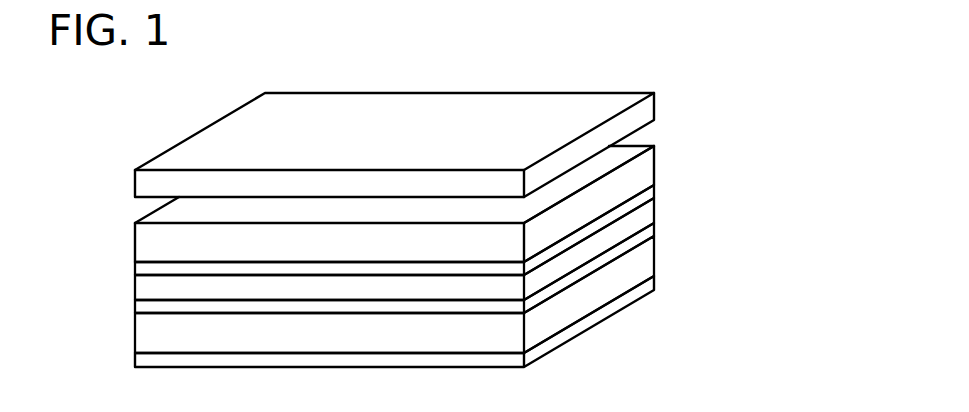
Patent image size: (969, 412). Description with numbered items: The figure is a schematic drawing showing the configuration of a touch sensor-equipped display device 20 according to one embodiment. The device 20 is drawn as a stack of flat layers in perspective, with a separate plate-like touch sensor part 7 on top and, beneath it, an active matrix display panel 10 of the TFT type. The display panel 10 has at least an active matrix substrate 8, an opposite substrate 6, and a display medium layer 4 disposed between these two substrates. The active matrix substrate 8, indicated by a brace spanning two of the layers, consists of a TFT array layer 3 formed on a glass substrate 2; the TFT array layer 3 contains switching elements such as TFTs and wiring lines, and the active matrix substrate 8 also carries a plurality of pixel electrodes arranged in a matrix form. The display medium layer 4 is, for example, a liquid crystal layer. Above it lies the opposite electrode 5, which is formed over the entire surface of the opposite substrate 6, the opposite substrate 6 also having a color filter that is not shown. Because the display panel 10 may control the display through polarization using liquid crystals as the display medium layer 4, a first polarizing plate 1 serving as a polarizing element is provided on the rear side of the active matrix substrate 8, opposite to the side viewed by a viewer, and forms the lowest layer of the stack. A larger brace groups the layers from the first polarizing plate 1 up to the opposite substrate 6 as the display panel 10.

The first polarizing plate 1 is at (656, 285).
The glass substrate 2 is at (643, 265).
The TFT array layer 3 is at (643, 235).
The display medium layer 4 is at (640, 212).
The opposite electrode 5 is at (643, 187).
The opposite substrate 6 is at (640, 168).
The touch sensor part 7 is at (643, 110).
The active matrix substrate 8 is at (713, 213).
The display panel 10 is at (768, 287).
The touch sensor-equipped display device 20 is at (591, 60).